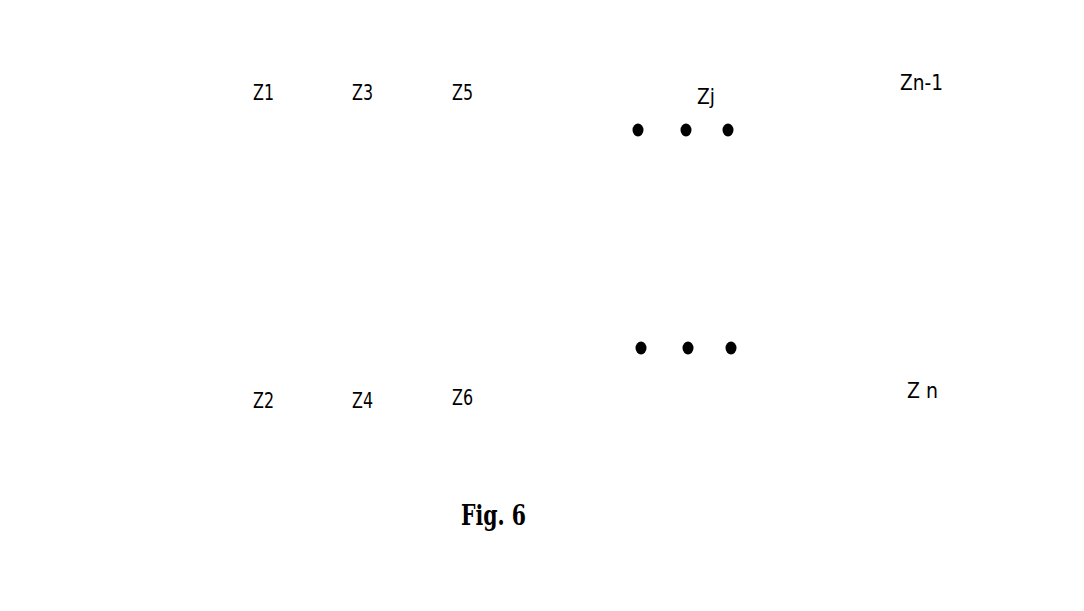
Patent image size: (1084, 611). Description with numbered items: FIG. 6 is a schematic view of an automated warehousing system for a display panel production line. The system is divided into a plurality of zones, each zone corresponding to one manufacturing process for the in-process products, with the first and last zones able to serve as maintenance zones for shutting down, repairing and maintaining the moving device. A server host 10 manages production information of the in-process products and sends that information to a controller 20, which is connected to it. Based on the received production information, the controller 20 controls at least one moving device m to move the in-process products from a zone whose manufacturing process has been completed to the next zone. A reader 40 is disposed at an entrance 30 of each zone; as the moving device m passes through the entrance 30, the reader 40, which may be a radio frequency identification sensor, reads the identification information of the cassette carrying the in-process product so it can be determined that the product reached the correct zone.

The server host 10 is at (98, 170).
The controller 20 is at (104, 221).
The entrance 30 is at (264, 289).
The reader 40 is at (554, 290).
The moving device m is at (240, 247).